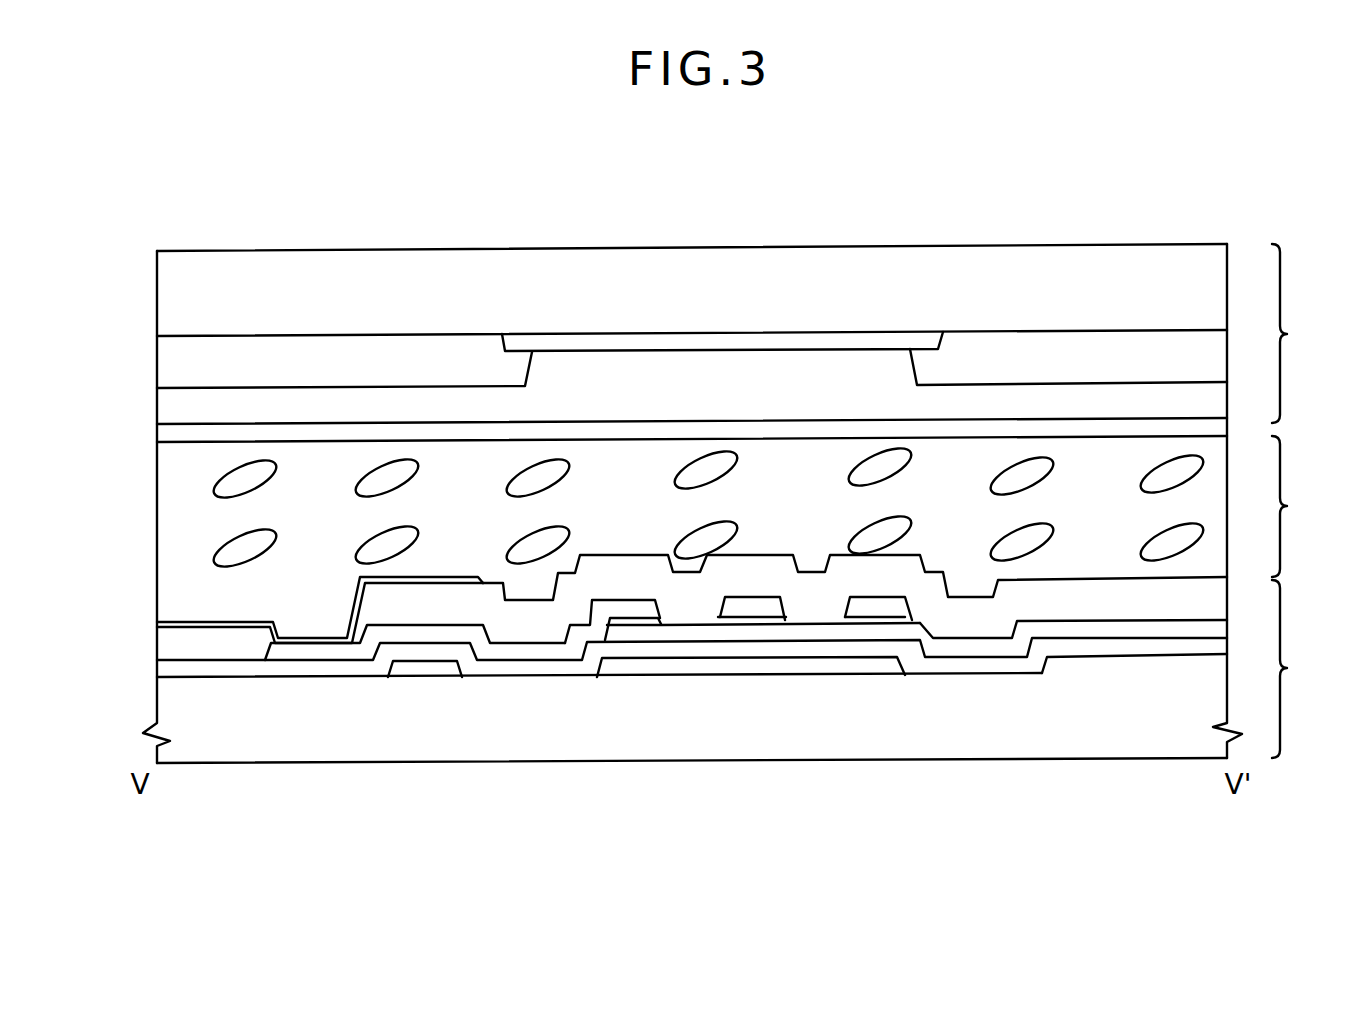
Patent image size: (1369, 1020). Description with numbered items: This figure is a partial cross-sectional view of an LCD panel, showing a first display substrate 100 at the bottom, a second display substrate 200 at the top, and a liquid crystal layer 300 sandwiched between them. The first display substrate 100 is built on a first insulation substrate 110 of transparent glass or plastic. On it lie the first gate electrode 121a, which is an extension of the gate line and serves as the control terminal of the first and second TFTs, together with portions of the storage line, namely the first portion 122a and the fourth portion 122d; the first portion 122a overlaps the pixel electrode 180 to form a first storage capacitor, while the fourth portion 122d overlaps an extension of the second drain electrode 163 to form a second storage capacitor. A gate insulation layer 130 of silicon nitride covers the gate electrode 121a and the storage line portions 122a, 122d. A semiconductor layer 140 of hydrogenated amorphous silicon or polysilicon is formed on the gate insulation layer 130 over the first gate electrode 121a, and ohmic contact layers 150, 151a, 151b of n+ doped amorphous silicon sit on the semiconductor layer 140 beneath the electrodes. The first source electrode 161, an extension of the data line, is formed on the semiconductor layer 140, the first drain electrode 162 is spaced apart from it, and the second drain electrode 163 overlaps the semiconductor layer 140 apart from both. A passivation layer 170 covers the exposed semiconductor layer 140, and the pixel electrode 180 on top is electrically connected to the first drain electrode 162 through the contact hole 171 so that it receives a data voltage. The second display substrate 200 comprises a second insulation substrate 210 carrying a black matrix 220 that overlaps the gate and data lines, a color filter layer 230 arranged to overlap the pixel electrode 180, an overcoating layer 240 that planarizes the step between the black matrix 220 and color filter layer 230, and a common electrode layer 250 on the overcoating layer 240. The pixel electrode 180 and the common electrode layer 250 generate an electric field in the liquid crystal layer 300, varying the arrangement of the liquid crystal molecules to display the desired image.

The first display substrate 100 is at (1303, 669).
The first insulation substrate 110 is at (490, 742).
The first gate electrode 121a is at (720, 667).
The first portion of the storage line 122a is at (420, 668).
The fourth portion of the storage line 122d is at (1188, 665).
The gate insulation layer 130 is at (1070, 648).
The semiconductor layer 140 is at (624, 635).
The ohmic contact layer 150 is at (740, 622).
The ohmic contact layer 151a is at (652, 622).
The ohmic contact layer 151b is at (868, 618).
The first source electrode 161 is at (758, 610).
The first drain electrode 162 is at (605, 607).
The second drain electrode 163 is at (888, 607).
The passivation layer 170 is at (1123, 607).
The contact hole 171 is at (217, 497).
The pixel electrode 180 is at (225, 623).
The second display substrate 200 is at (1303, 333).
The second insulation substrate 210 is at (168, 301).
The black matrix 220 is at (707, 343).
The color filter layer 230 is at (168, 365).
The overcoating layer 240 is at (168, 407).
The common electrode layer 250 is at (168, 440).
The liquid crystal layer 300 is at (1303, 506).